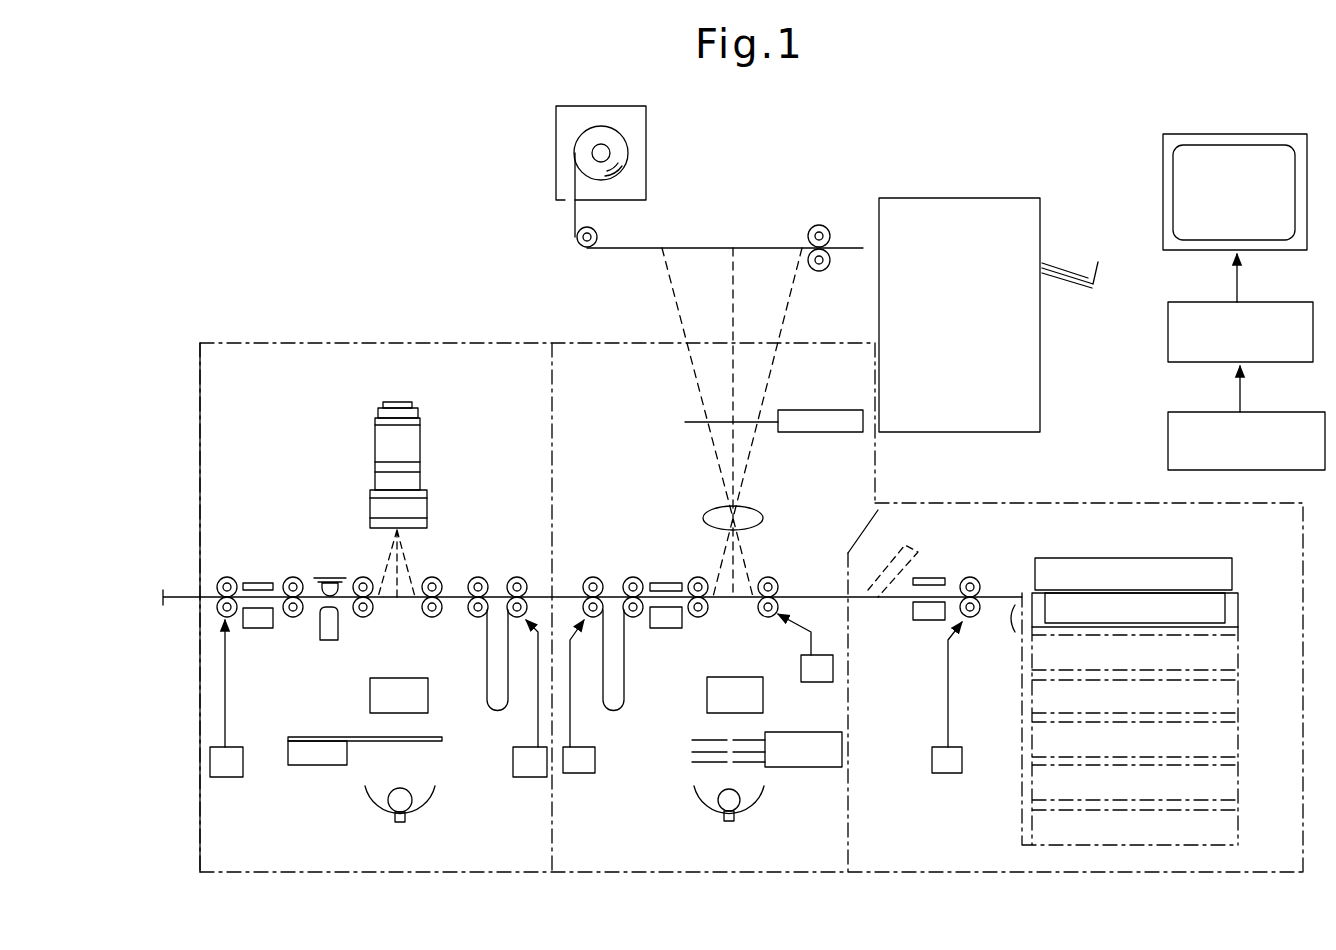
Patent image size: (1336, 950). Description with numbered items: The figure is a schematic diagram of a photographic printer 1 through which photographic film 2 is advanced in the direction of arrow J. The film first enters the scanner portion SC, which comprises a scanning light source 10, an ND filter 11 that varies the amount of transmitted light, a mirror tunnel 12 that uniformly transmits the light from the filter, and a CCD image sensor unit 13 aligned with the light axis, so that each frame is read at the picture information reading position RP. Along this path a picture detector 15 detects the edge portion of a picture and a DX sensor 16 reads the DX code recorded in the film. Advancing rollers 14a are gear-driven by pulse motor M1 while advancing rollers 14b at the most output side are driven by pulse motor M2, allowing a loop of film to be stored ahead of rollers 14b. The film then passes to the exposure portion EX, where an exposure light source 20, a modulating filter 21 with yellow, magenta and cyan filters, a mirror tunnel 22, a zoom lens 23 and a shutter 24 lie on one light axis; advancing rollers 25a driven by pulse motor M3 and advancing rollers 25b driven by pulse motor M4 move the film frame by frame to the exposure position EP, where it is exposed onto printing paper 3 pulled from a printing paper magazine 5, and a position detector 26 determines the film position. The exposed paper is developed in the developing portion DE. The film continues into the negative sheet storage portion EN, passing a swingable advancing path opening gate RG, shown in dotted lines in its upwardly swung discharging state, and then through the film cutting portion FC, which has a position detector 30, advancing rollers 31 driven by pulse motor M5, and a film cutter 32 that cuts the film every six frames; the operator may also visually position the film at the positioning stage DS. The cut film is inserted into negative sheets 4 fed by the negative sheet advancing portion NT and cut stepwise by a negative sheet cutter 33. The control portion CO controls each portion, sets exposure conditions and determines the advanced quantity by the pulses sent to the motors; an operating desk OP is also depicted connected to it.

The photographic printer 1 is at (310, 255).
The photographic film 2 is at (180, 597).
The printing paper 3 is at (855, 246).
The negative sheets 4 is at (1242, 820).
The printing paper magazine 5 is at (556, 160).
The scanning light source 10 is at (422, 813).
The ND filter 11 is at (325, 765).
The mirror tunnel 12 is at (428, 688).
The CCD image sensor unit 13 is at (375, 425).
The advancing rollers 14a is at (478, 578).
The advancing rollers 14b is at (517, 578).
The picture detector 15 is at (260, 628).
The DX sensor 16 is at (322, 640).
The exposure light source 20 is at (752, 812).
The modulating filter 21 is at (788, 760).
The mirror tunnel 22 is at (763, 696).
The zoom lens 23 is at (720, 510).
The shutter 24 is at (840, 410).
The advancing rollers 25a is at (633, 578).
The advancing rollers 25b is at (771, 582).
The position detector 26 is at (666, 628).
The position detector 30 is at (913, 612).
The advancing rollers 31 is at (968, 616).
The film cutter 32 is at (1015, 595).
The negative sheet cutter 33 is at (1222, 577).
The scanner portion SC is at (292, 343).
The exposure portion EX is at (635, 340).
The negative sheet storage portion EN is at (1022, 493).
The developing portion DE is at (981, 190).
The monitor MO is at (1163, 178).
The control portion CO is at (1168, 320).
The operating desk OP is at (1168, 458).
The arrow J is at (278, 565).
The picture information reading position RP is at (395, 607).
The exposure position EP is at (729, 607).
The advancing path opening gate RG is at (924, 558).
The positioning stage DS is at (1003, 580).
The negative sheet advancing portion NT is at (1190, 545).
The film cutting portion FC is at (982, 742).
The pulse motor M1 is at (240, 777).
The pulse motor M2 is at (530, 777).
The pulse motor M3 is at (590, 773).
The pulse motor M4 is at (833, 668).
The pulse motor M5 is at (930, 765).